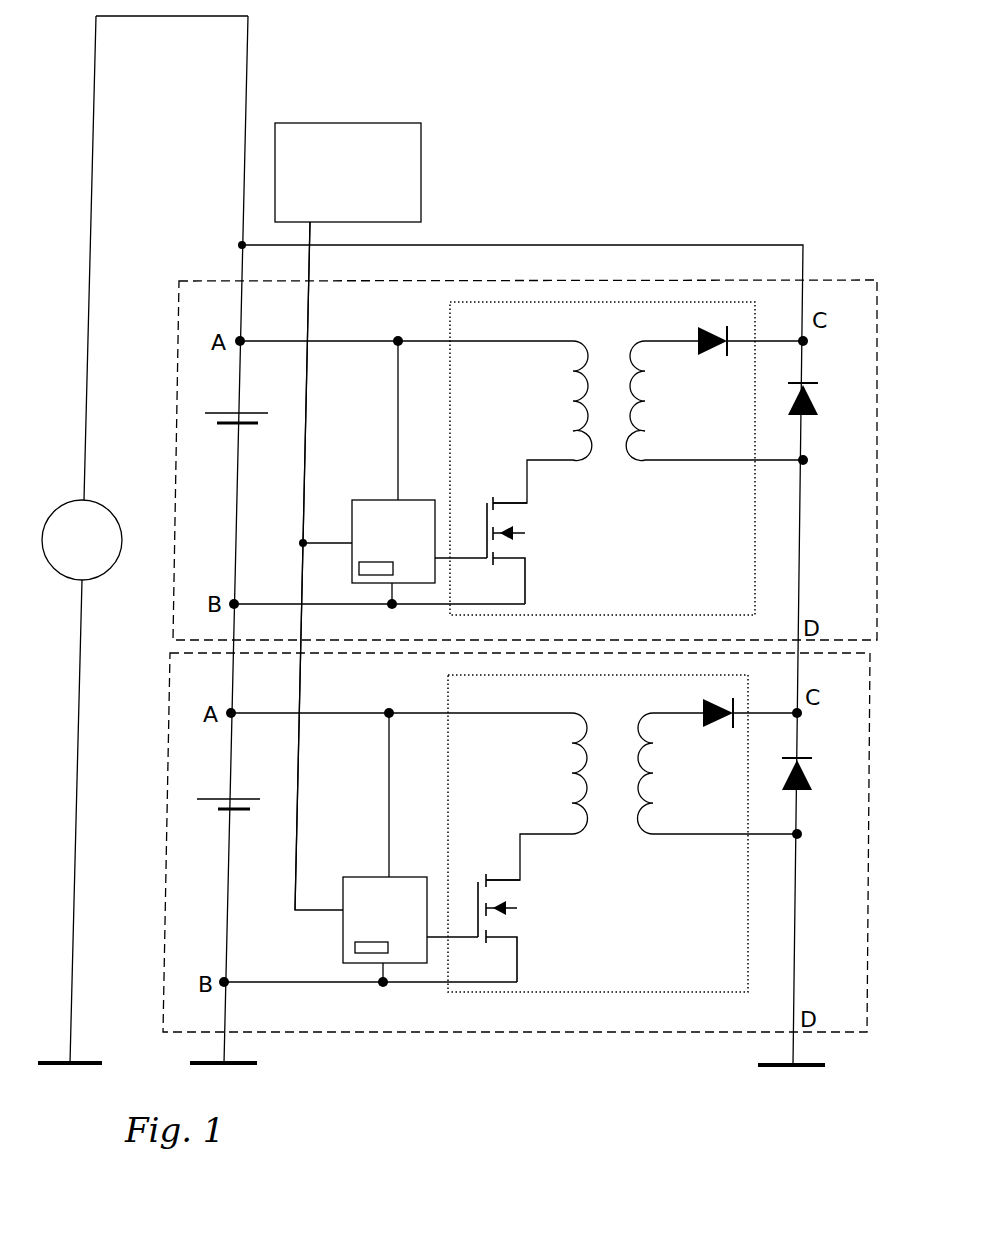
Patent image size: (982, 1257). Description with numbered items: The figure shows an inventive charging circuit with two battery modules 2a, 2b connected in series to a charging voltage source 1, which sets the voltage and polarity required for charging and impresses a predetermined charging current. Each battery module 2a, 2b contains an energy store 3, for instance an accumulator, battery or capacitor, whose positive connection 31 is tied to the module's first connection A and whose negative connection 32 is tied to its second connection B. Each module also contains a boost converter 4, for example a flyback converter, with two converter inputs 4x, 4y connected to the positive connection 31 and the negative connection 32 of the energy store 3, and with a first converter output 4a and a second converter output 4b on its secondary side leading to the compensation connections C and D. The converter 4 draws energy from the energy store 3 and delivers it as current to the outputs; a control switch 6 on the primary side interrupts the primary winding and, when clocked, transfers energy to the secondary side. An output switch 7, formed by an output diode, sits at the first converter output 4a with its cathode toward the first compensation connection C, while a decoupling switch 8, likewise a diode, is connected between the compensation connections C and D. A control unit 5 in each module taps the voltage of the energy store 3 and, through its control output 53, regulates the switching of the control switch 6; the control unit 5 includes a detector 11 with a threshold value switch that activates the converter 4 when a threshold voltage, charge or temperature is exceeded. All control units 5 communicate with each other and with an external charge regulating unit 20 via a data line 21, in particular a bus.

The charging voltage source 1 is at (82, 540).
The battery module 2a is at (173, 412).
The battery module 2b is at (170, 790).
The energy store 3 is at (232, 615).
The positive connection 31 is at (240, 592).
The negative connection 32 is at (250, 632).
The boost converter 4 is at (601, 647).
The converter input 4x is at (399, 597).
The converter input 4y is at (372, 783).
The first converter output 4a is at (726, 518).
The second converter output 4b is at (726, 637).
The control unit 5 is at (388, 727).
The control output 53 is at (442, 750).
The control switch 6 is at (511, 739).
The output switch 7 is at (715, 539).
The decoupling switch 8 is at (809, 586).
The detector 11 is at (373, 575).
The charge regulating unit 20 is at (348, 161).
The data line 21 is at (310, 441).